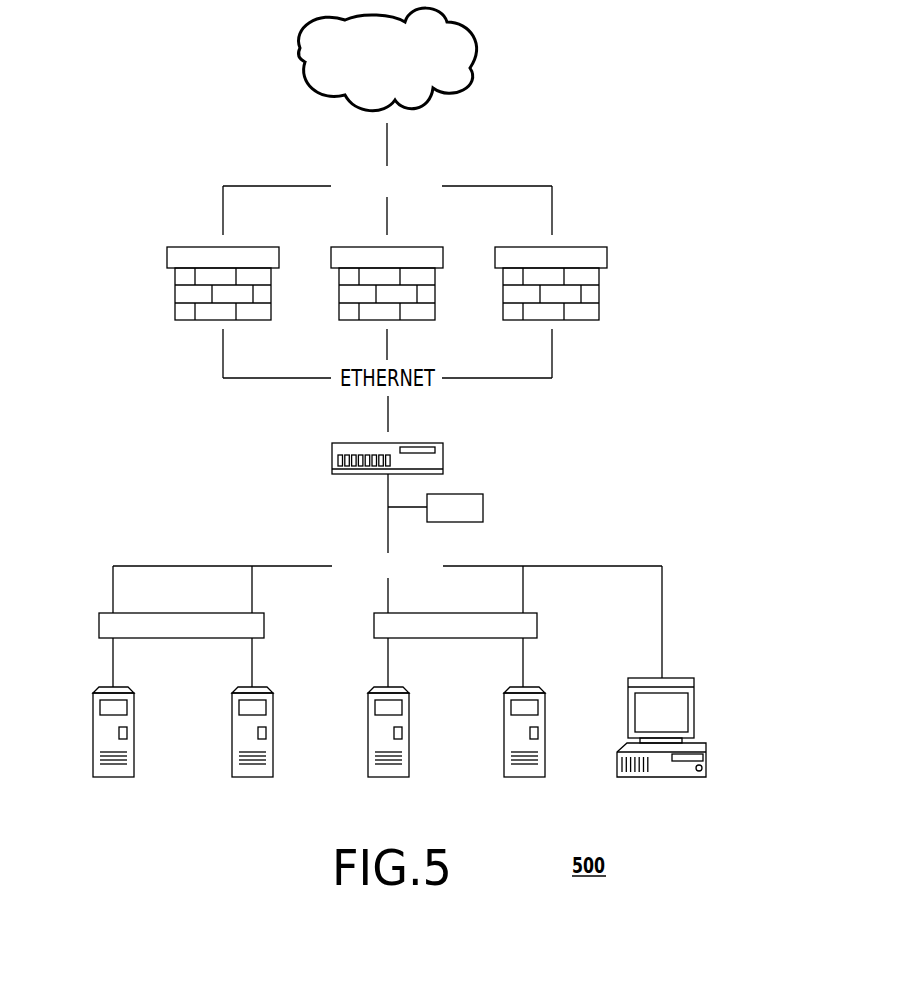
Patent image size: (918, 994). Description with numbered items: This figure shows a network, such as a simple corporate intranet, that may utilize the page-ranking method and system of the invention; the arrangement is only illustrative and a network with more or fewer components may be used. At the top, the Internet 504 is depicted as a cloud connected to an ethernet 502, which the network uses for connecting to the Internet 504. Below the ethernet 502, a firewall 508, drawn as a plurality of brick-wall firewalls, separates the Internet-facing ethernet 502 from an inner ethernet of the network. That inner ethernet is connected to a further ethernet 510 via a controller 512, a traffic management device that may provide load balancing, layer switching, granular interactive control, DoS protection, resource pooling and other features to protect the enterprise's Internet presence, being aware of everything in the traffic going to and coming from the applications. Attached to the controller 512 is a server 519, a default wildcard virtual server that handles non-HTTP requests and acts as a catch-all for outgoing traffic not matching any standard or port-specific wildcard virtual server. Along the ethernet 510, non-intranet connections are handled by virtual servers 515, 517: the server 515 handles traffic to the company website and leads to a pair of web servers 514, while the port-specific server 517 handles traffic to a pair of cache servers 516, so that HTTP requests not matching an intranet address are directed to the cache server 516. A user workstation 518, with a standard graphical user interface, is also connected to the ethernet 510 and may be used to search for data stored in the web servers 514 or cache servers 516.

The ethernet 502 is at (561, 175).
The Internet 504 is at (480, 45).
The firewall 508 is at (172, 292).
The ethernet 510 is at (664, 555).
The controller 512 is at (443, 455).
The web server 514 is at (113, 778).
The virtual server 515 is at (98, 628).
The cache server 516 is at (388, 778).
The virtual server 517 is at (538, 627).
The user workstation 518 is at (667, 778).
The server 519 is at (483, 508).